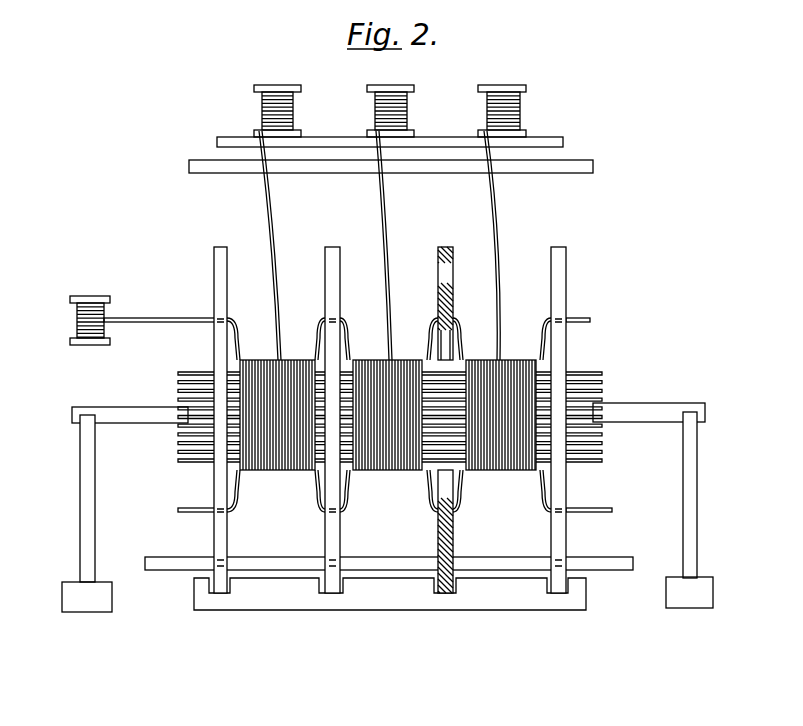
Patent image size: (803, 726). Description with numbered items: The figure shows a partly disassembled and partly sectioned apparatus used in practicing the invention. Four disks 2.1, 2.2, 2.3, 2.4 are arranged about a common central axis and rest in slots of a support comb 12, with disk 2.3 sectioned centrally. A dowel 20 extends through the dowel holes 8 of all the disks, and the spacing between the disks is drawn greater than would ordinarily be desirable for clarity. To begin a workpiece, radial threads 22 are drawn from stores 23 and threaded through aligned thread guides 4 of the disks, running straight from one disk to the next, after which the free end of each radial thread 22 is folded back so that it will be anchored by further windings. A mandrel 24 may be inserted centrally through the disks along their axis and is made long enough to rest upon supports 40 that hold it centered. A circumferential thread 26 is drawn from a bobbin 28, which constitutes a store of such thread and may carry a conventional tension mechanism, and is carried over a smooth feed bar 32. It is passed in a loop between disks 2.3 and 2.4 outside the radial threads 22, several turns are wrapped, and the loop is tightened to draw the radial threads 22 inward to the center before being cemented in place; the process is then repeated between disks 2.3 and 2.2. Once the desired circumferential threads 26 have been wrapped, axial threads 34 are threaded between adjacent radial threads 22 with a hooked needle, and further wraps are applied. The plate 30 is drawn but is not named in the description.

The disk 2.1 is at (217, 260).
The disk 2.2 is at (333, 273).
The disk 2.3 is at (453, 262).
The disk 2.4 is at (561, 260).
The thread guide 4 is at (219, 310).
The dowel hole 8 is at (440, 278).
The support comb 12 is at (197, 600).
The dowel 20 is at (610, 563).
The radial thread 22 is at (155, 318).
The store 23 is at (70, 302).
The mandrel 24 is at (126, 412).
The circumferential thread 26 is at (270, 200).
The bobbin 28 is at (254, 90).
The upper plate 30 is at (550, 137).
The feed bar 32 is at (575, 173).
The axial thread 34 is at (178, 442).
The support 40 is at (83, 490).